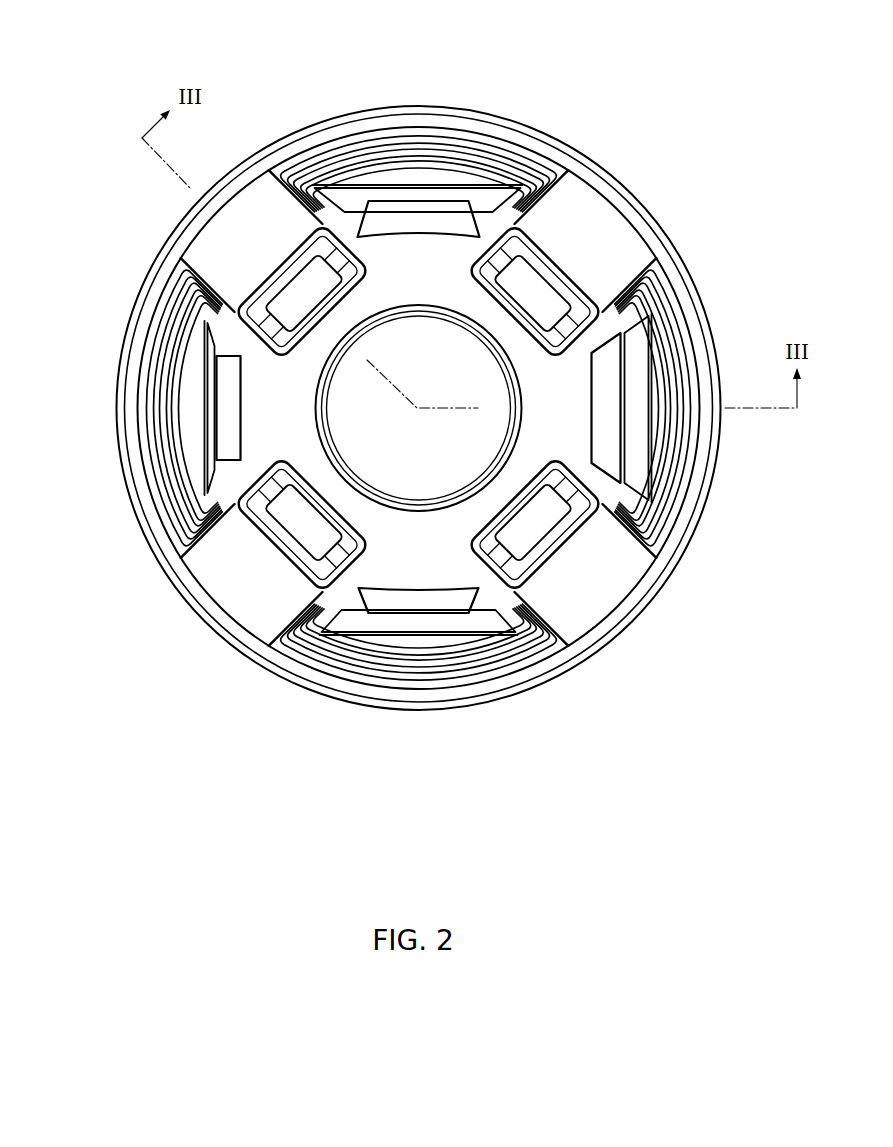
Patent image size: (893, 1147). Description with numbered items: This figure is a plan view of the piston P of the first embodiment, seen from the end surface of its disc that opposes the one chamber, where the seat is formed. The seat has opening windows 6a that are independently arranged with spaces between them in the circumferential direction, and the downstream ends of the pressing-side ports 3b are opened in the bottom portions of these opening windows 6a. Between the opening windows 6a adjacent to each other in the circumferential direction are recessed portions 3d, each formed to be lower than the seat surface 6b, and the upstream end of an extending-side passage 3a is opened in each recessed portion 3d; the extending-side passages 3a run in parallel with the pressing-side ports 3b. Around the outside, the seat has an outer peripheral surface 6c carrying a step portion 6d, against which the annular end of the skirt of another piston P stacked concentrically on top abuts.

The piston P is at (133, 268).
The extending-side passages 3a is at (298, 288).
The pressing-side ports 3b is at (392, 195).
The recessed portions 3d is at (243, 250).
The opening windows 6a is at (448, 165).
The seat surface 6b is at (505, 172).
The outer peripheral surface 6c is at (334, 172).
The step portion 6d is at (428, 140).